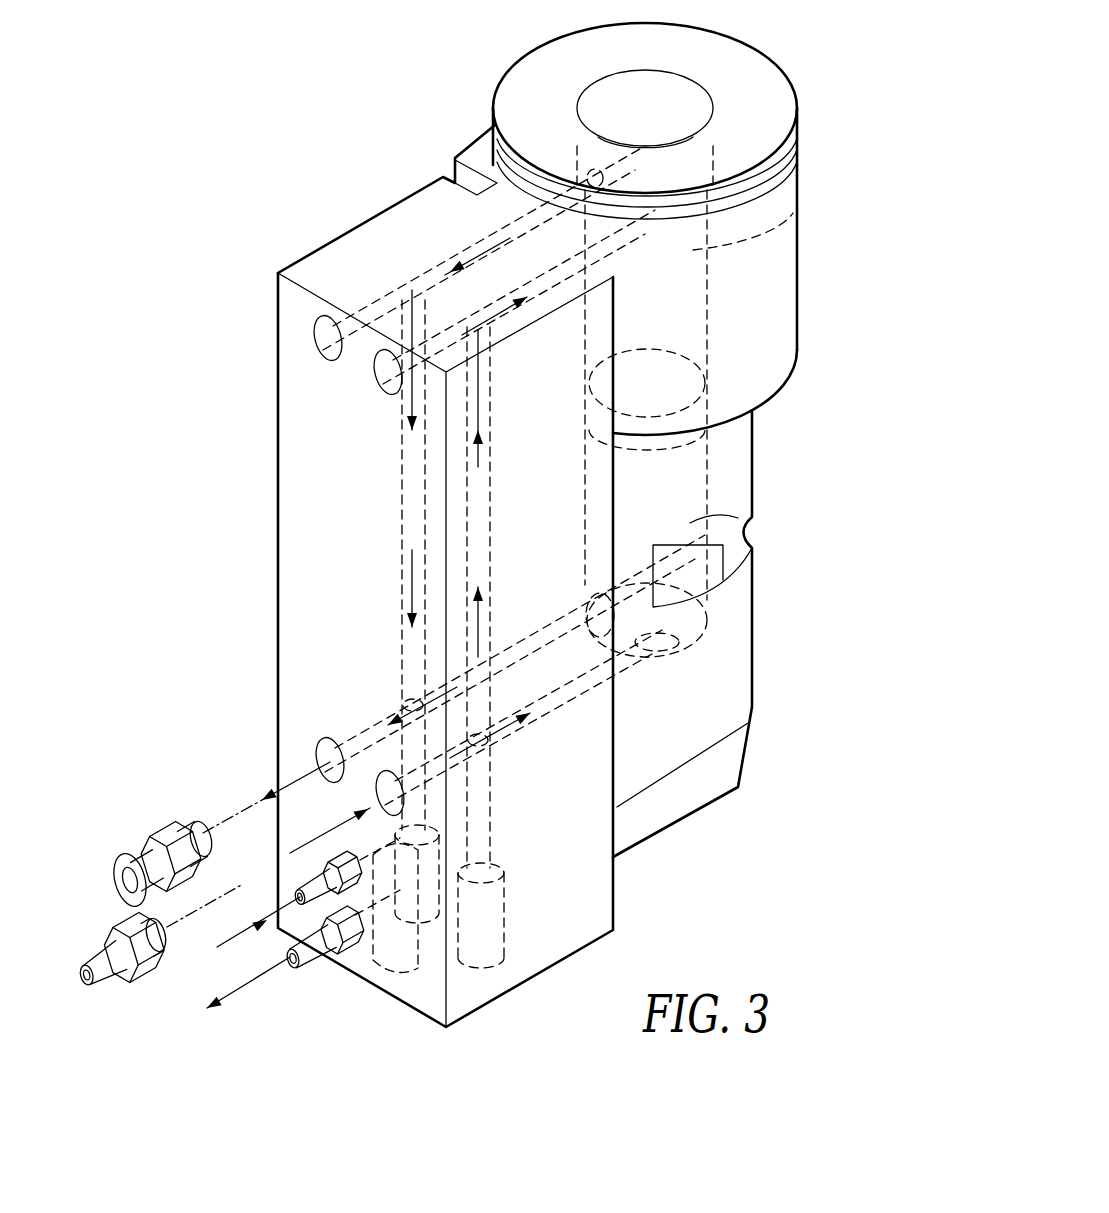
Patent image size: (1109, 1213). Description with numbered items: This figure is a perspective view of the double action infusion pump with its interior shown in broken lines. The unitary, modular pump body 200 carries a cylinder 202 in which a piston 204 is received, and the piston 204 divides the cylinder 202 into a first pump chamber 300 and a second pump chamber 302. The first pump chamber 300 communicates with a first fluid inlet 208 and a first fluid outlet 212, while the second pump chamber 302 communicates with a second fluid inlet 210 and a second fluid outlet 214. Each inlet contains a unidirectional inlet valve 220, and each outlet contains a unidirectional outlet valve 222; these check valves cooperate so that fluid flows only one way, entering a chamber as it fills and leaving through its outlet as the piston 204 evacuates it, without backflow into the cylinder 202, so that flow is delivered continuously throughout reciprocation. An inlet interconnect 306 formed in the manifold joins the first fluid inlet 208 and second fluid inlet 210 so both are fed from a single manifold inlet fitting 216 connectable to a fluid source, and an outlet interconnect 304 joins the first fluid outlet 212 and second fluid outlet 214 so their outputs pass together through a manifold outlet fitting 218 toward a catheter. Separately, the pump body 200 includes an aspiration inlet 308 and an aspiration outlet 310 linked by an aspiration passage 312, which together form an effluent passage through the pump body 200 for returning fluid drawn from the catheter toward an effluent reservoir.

The pump body 200 is at (750, 483).
The cylinder 202 is at (694, 95).
The piston 204 is at (686, 372).
The first fluid inlet 208 is at (617, 250).
The second fluid inlet 210 is at (630, 667).
The first fluid outlet 212 is at (495, 152).
The second fluid outlet 214 is at (553, 622).
The manifold inlet fitting 216 is at (155, 972).
The manifold outlet fitting 218 is at (170, 832).
The unidirectional inlet valve 220 is at (570, 307).
The unidirectional outlet valve 222 is at (473, 233).
The first pump chamber 300 is at (800, 207).
The second pump chamber 302 is at (757, 549).
The outlet interconnect 304 is at (410, 487).
The inlet interconnect 306 is at (477, 508).
The aspiration inlet 308 is at (300, 882).
The aspiration outlet 310 is at (320, 973).
The aspiration passage 312 is at (410, 960).